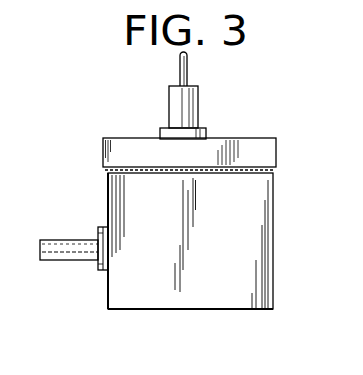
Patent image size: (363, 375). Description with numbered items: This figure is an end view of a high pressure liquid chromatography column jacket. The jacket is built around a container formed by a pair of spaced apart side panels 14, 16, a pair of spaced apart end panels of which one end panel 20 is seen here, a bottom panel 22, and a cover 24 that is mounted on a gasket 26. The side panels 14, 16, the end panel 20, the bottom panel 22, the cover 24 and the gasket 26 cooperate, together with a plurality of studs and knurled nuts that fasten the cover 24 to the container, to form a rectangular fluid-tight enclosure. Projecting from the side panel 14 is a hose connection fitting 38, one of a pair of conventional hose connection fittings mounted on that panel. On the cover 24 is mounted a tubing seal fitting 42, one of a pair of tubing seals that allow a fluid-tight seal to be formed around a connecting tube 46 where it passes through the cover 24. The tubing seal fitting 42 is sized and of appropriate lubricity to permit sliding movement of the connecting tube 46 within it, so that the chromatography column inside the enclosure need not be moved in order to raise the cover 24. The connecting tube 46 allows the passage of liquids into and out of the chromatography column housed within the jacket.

The side panel 14 is at (107, 176).
The side panel 16 is at (273, 285).
The end panel 20 is at (258, 230).
The bottom panel 22 is at (188, 310).
The cover 24 is at (247, 138).
The gasket 26 is at (233, 171).
The hose connection fitting 38 is at (63, 260).
The tubing seal fitting 42 is at (198, 106).
The connecting tube 46 is at (181, 69).